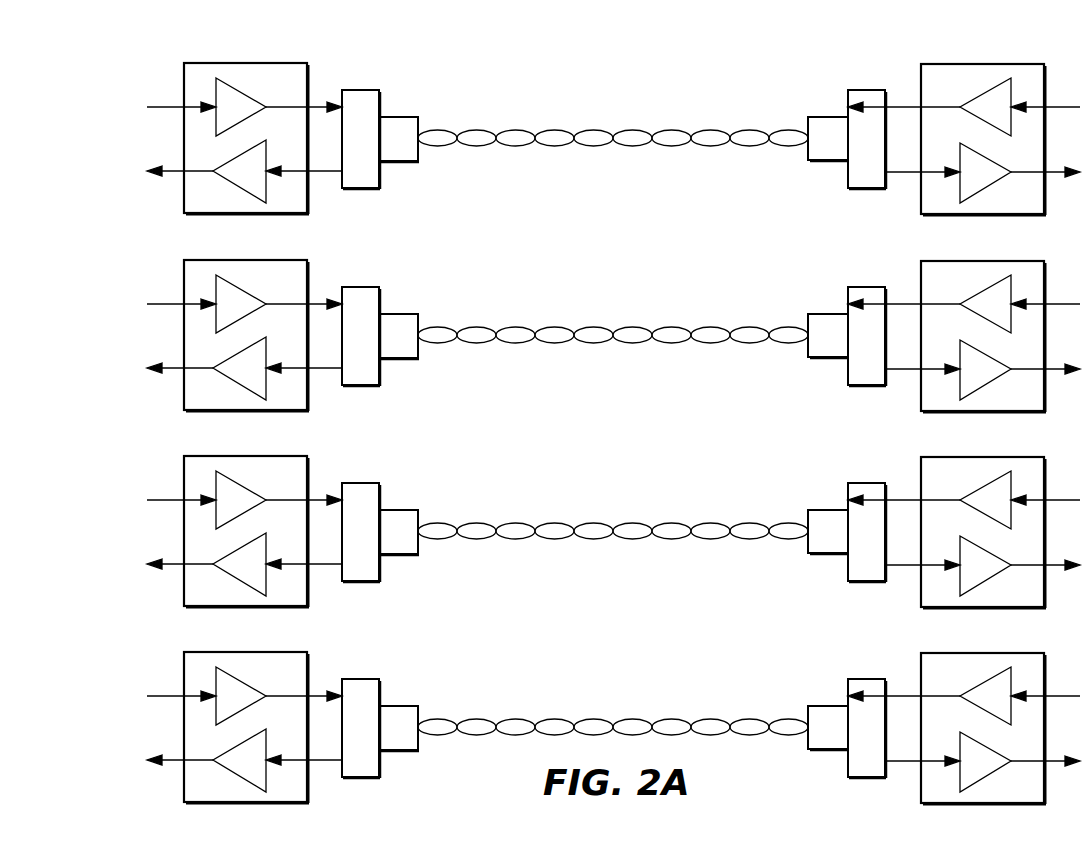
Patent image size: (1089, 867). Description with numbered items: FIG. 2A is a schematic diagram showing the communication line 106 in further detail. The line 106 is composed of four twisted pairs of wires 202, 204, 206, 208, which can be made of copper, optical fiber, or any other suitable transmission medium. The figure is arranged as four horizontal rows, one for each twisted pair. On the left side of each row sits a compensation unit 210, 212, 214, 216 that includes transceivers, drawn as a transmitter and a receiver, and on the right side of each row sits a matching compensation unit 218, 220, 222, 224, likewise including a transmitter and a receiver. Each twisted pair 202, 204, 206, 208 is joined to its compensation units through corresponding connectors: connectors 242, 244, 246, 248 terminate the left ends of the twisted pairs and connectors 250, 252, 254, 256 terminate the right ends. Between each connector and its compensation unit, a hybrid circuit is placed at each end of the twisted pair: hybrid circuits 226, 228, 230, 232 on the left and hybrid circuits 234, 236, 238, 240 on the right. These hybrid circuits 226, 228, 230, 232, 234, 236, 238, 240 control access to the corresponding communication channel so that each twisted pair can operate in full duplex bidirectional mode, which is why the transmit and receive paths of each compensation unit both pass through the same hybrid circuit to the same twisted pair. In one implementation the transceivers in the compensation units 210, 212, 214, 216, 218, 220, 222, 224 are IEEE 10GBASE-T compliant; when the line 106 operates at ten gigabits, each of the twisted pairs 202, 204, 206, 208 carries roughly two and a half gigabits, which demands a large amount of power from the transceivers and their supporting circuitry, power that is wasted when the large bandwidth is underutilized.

The communication line 106 is at (539, 62).
The twisted pair of wires 202 is at (607, 130).
The twisted pair of wires 204 is at (613, 312).
The twisted pair of wires 206 is at (613, 508).
The twisted pair of wires 208 is at (613, 704).
The compensation unit 210 is at (232, 208).
The compensation unit 212 is at (244, 335).
The compensation unit 214 is at (244, 531).
The compensation unit 216 is at (244, 727).
The compensation unit 218 is at (1037, 208).
The compensation unit 220 is at (964, 336).
The compensation unit 222 is at (964, 532).
The compensation unit 224 is at (964, 728).
The hybrid circuit 226 is at (360, 90).
The hybrid circuit 228 is at (342, 313).
The hybrid circuit 230 is at (342, 509).
The hybrid circuit 232 is at (342, 705).
The hybrid circuit 234 is at (866, 90).
The hybrid circuit 236 is at (849, 313).
The hybrid circuit 238 is at (849, 509).
The hybrid circuit 240 is at (849, 705).
The connector 242 is at (399, 117).
The connector 244 is at (415, 314).
The connector 246 is at (415, 510).
The connector 248 is at (415, 706).
The connector 250 is at (815, 117).
The connector 252 is at (802, 312).
The connector 254 is at (802, 508).
The connector 256 is at (802, 704).